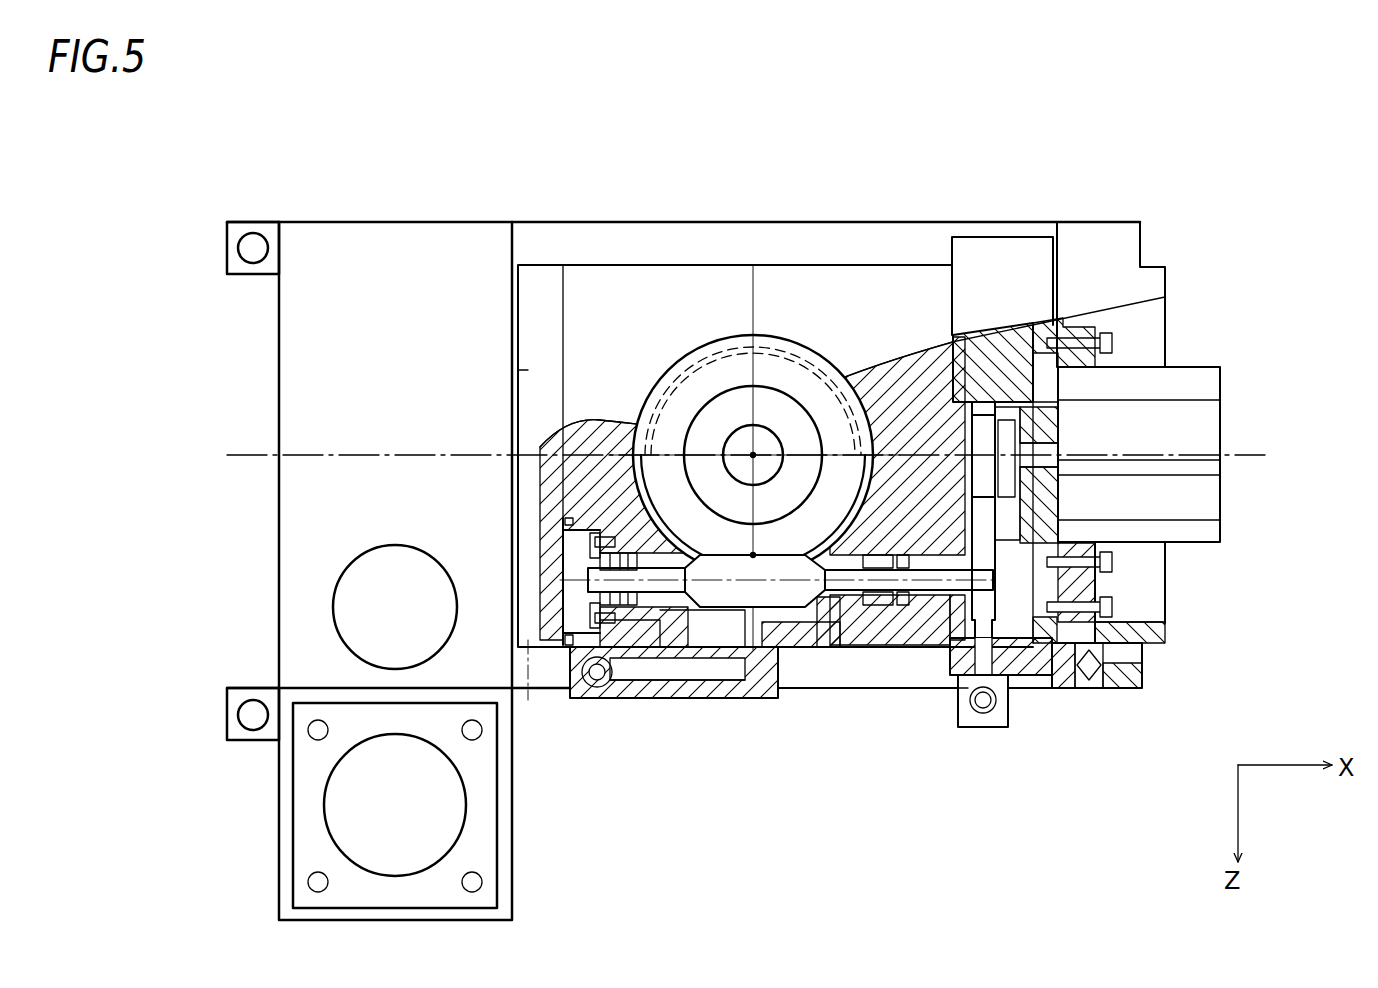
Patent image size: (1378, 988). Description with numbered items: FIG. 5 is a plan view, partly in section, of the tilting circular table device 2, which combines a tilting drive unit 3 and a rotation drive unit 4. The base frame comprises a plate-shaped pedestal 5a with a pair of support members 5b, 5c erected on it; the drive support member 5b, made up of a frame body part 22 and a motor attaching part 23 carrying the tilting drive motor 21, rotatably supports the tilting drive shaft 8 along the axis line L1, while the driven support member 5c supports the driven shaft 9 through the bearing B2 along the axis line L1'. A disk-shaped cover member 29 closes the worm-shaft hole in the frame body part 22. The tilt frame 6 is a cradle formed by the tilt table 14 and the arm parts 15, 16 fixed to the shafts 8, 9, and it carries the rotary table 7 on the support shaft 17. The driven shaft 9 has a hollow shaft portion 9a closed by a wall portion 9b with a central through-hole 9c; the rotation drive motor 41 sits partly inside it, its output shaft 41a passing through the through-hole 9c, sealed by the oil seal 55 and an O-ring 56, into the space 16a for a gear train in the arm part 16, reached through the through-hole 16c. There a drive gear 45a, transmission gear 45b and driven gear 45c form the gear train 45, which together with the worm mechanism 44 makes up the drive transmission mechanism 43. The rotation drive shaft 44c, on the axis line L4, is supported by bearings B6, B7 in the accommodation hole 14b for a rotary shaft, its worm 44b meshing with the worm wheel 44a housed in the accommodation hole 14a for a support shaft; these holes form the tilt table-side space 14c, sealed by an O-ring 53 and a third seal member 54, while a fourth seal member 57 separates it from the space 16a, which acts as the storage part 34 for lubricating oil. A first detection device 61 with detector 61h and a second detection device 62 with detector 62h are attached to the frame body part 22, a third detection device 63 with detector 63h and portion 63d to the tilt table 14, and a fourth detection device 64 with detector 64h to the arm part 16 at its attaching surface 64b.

The tilting circular table device 2 is at (300, 140).
The tilting drive unit 3 is at (298, 218).
The rotation drive unit 4 is at (1108, 212).
The pedestal 5a is at (665, 265).
The drive support member 5b is at (279, 375).
The driven support member 5c is at (1140, 235).
The tilt frame 6 is at (930, 240).
The rotary table 7 is at (712, 330).
The tilting drive shaft 8 is at (512, 432).
The driven shaft 9 is at (1240, 620).
The shaft portion 9a is at (1160, 640).
The wall portion 9b is at (1160, 630).
The through-hole 9c is at (1090, 460).
The tilt table 14 is at (690, 330).
The accommodation hole for a support shaft 14a is at (685, 650).
The accommodation hole for a rotary shaft 14b is at (655, 650).
The tilt table-side space 14c is at (700, 752).
The arm part 15 is at (545, 265).
The arm part 16 is at (995, 237).
The space for a gear train 16a is at (1000, 525).
The through-hole 16c is at (1090, 495).
The support shaft 17 is at (775, 420).
The tilting drive motor 21 is at (355, 843).
The frame body part 22 is at (279, 598).
The motor attaching part 23 is at (279, 805).
The cover member 29 is at (340, 590).
The storage part 34 is at (1010, 700).
The rotation drive motor 41 is at (1180, 367).
The output shaft 41a is at (1070, 440).
The drive transmission mechanism 43 is at (918, 600).
The worm mechanism 44 is at (882, 762).
The worm wheel 44a is at (822, 650).
The worm 44b is at (778, 660).
The rotation drive shaft 44c is at (860, 640).
The gear train 45 is at (1100, 600).
The drive gear 45a is at (1100, 400).
The transmission gear 45b is at (1090, 520).
The driven gear 45c is at (1000, 570).
The O-ring 53 is at (560, 660).
The third seal member 54 is at (895, 600).
The oil seal 55 is at (1090, 475).
The O-ring 56 is at (1105, 385).
The fourth seal member 57 is at (950, 600).
The first detection device 61 is at (215, 265).
The detector 61h is at (235, 245).
The second detection device 62 is at (222, 742).
The detector 62h is at (237, 715).
The third detection device 63 is at (577, 712).
The bracket recess 63d is at (628, 690).
The detector 63h is at (598, 680).
The fourth detection device 64 is at (985, 715).
The attaching surface 64b is at (960, 700).
The detector 64h is at (995, 700).
The bearing B2 is at (1140, 660).
The bearing B6 is at (610, 520).
The bearing B7 is at (880, 560).
The axis line L1 is at (729, 438).
The axis line L1' is at (1275, 466).
The axis line L4 is at (528, 700).